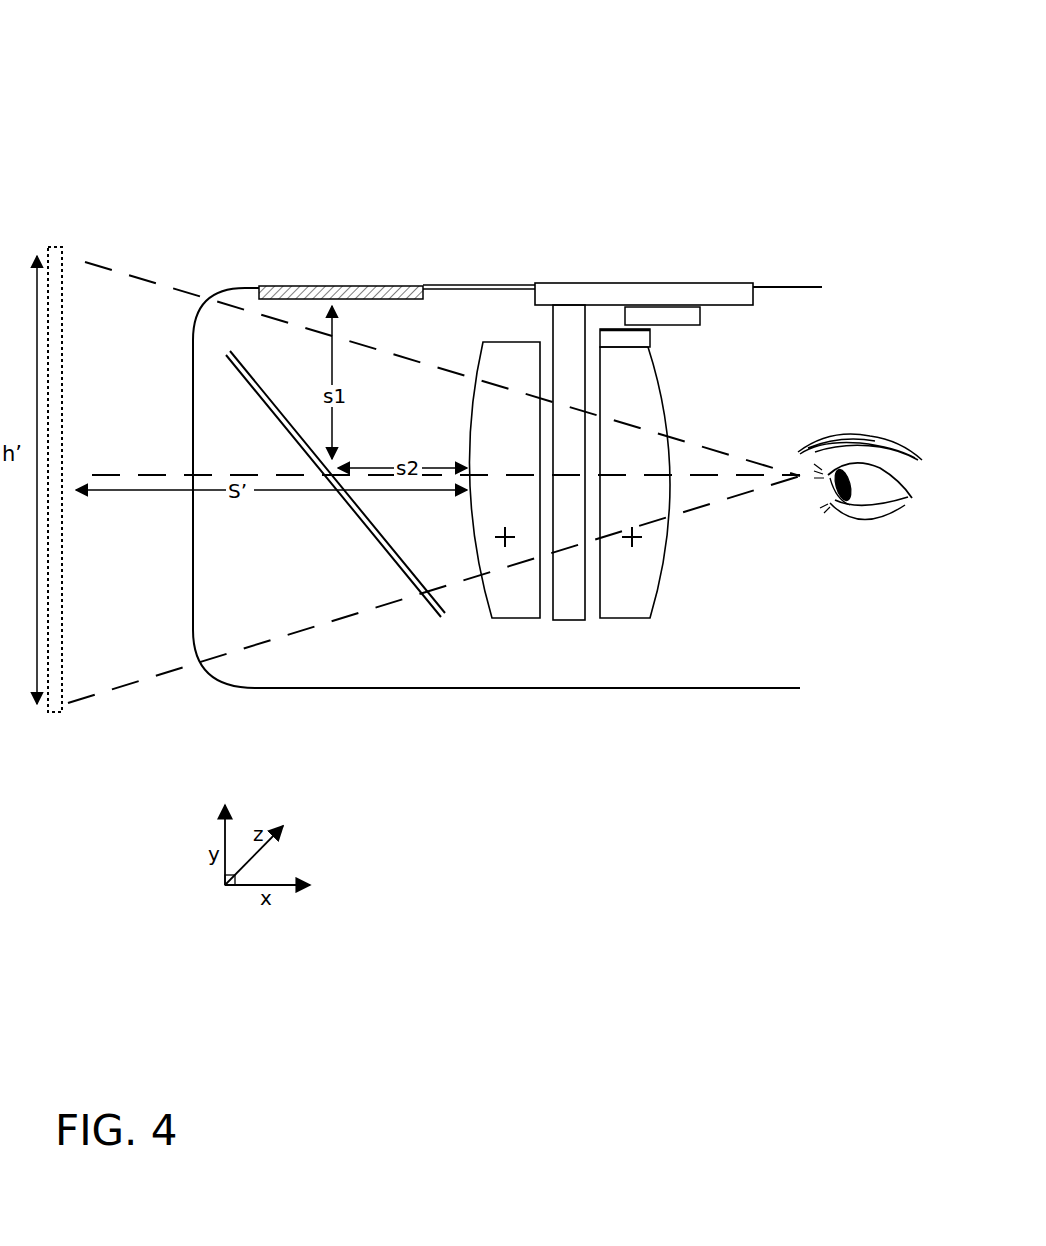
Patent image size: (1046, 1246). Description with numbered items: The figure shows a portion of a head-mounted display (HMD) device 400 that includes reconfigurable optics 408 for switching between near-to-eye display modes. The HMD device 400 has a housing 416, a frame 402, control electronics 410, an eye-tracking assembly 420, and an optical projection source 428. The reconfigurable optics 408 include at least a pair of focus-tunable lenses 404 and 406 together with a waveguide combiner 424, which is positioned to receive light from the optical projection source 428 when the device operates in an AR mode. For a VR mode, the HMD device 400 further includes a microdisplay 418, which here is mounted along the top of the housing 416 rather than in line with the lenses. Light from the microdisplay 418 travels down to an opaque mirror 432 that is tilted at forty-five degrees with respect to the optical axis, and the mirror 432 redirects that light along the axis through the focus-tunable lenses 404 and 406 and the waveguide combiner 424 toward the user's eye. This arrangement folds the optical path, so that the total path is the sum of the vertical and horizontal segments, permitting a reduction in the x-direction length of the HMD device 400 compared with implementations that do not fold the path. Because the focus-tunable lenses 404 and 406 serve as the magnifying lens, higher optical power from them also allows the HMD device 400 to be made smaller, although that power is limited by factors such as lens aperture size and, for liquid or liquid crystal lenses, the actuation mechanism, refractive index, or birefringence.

The head-mounted display device 400 is at (150, 68).
The frame 402 is at (795, 287).
The focus-tunable lens 404 is at (517, 618).
The focus-tunable lens 406 is at (626, 618).
The reconfigurable optics 408 is at (682, 608).
The control electronics 410 is at (644, 294).
The housing 416 is at (620, 688).
The microdisplay 418 is at (383, 287).
The eye-tracking assembly 420 is at (650, 340).
The waveguide combiner 424 is at (567, 620).
The optical projection source 428 is at (700, 315).
The opaque mirror 432 is at (378, 547).